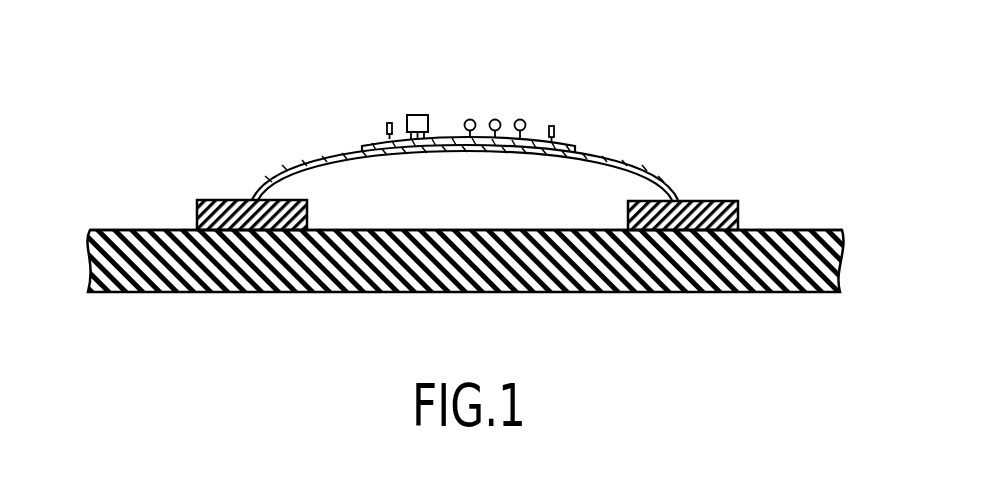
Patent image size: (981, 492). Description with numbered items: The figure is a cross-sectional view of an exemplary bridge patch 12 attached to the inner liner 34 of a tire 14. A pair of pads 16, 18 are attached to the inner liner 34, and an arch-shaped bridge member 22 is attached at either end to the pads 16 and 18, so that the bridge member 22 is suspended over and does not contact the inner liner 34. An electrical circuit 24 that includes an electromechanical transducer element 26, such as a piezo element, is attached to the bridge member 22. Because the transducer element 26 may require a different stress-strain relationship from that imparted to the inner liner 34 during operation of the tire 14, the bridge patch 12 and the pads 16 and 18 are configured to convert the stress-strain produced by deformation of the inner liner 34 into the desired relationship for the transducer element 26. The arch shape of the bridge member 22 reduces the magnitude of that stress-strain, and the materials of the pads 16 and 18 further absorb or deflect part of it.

The bridge patch 12 is at (465, 102).
The tire 14 is at (763, 272).
The pad 16 is at (213, 200).
The pad 18 is at (706, 200).
The bridge member 22 is at (292, 167).
The electrical circuit 24 is at (503, 130).
The electromechanical transducer element 26 is at (420, 114).
The inner liner 34 is at (797, 231).